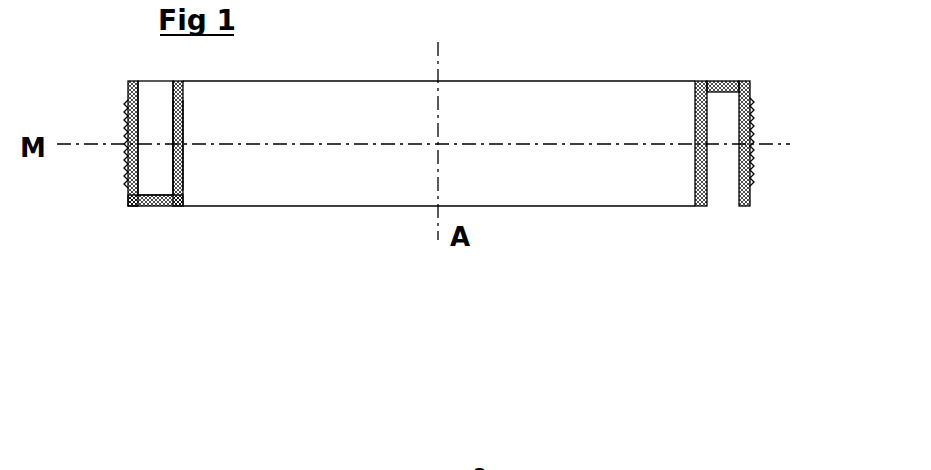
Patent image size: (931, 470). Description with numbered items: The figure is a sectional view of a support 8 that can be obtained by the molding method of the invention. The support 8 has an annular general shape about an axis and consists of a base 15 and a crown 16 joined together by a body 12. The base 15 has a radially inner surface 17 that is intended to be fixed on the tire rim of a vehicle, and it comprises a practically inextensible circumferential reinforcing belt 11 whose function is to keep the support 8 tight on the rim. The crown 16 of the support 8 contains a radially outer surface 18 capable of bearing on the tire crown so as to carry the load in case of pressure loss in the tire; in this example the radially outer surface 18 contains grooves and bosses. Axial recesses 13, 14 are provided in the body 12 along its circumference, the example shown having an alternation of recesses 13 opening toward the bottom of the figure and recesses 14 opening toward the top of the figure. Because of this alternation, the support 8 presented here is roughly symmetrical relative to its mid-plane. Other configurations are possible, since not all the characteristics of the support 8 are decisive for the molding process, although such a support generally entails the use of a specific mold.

The support 8 is at (300, 222).
The circumferential reinforcing belt 11 is at (185, 125).
The body 12 is at (150, 207).
The axial recess 13 is at (722, 172).
The axial recess 14 is at (158, 160).
The base 15 is at (184, 163).
The crown 16 is at (184, 169).
The radially inner surface 17 is at (184, 150).
The radially outer surface 18 is at (126, 118).